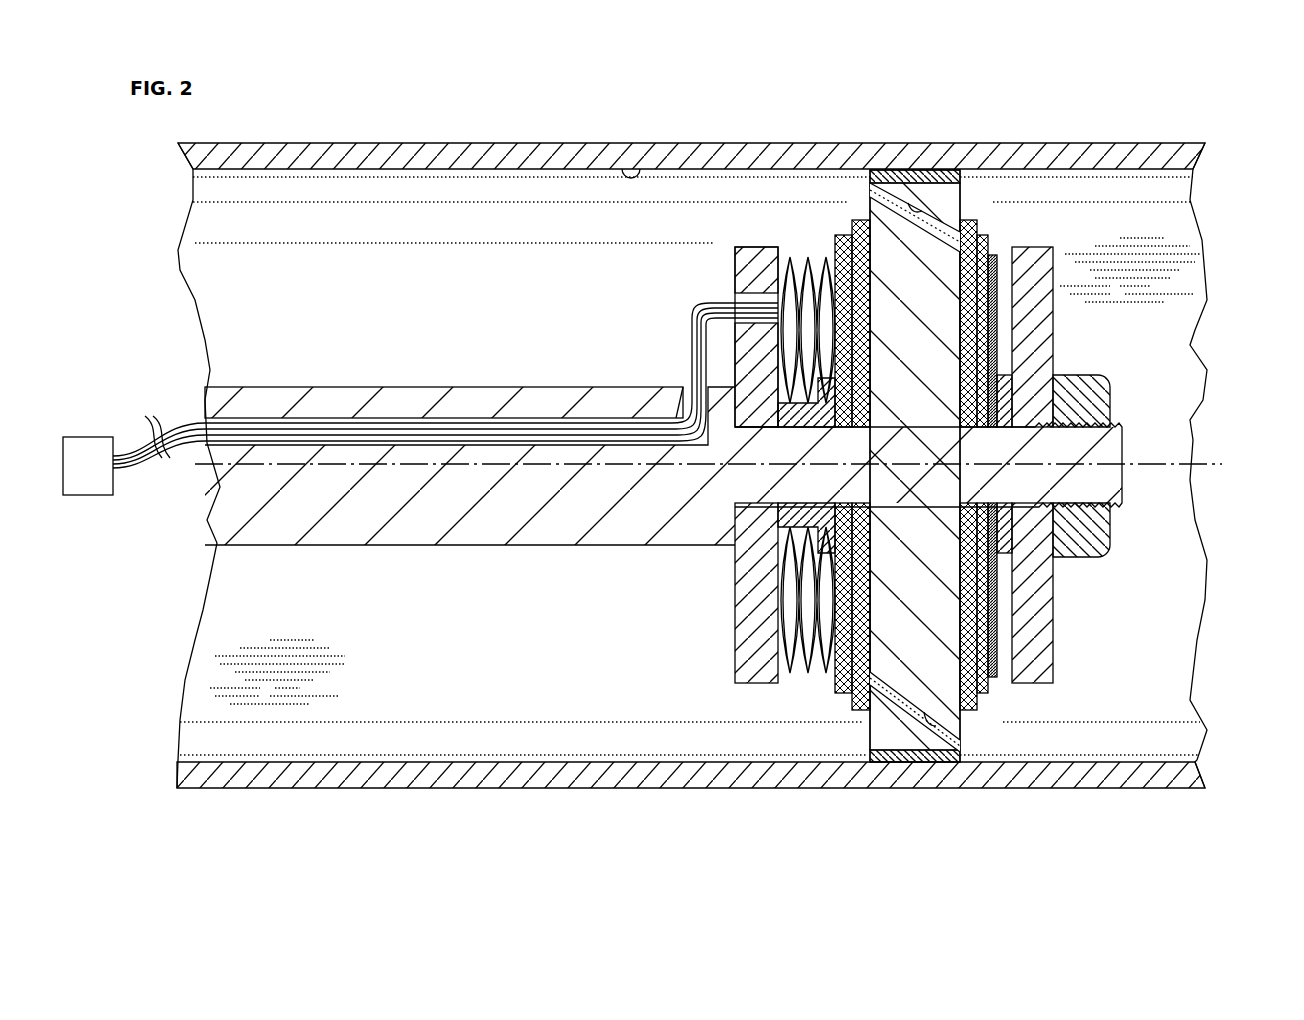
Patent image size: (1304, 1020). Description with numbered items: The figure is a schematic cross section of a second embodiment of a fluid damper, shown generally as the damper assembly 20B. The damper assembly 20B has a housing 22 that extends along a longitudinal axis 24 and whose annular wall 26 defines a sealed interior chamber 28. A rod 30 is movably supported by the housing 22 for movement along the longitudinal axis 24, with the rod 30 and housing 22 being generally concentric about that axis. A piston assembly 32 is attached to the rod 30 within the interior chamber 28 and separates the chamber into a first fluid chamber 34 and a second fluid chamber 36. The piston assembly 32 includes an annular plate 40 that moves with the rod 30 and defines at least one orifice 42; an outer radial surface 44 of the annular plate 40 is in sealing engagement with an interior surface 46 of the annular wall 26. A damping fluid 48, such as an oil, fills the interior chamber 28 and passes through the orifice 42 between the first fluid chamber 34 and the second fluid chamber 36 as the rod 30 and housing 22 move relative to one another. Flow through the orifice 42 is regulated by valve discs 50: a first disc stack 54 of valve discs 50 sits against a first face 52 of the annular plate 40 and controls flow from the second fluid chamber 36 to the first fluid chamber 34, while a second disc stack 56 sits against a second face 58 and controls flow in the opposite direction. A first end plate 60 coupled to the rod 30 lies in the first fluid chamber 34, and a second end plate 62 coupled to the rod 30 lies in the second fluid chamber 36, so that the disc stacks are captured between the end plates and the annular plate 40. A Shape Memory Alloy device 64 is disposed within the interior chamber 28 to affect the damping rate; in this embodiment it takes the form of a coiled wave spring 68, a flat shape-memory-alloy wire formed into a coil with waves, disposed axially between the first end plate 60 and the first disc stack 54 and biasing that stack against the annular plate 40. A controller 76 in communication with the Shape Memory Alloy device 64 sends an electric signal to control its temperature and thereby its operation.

The damper assembly 20B is at (1149, 98).
The housing 22 is at (468, 143).
The longitudinal axis 24 is at (197, 482).
The annular wall 26 is at (550, 158).
The interior chamber 28 is at (386, 316).
The rod 30 is at (316, 545).
The piston assembly 32 is at (1058, 214).
The first fluid chamber 34 is at (481, 634).
The second fluid chamber 36 is at (1111, 645).
The annular plate 40 is at (948, 672).
The orifice 42 is at (915, 210).
The outer radial surface 44 is at (903, 170).
The interior surface 46 is at (631, 174).
The damping fluid 48 is at (275, 710).
The valve disc 50 is at (843, 222).
The first face 52 is at (862, 216).
The first disc stack 54 is at (832, 240).
The second disc stack 56 is at (1009, 265).
The second face 58 is at (968, 220).
The first end plate 60 is at (758, 683).
The second end plate 62 is at (1040, 684).
The Shape Memory Alloy device 64 is at (810, 684).
The coiled wave spring 68 is at (783, 612).
The controller 76 is at (92, 440).